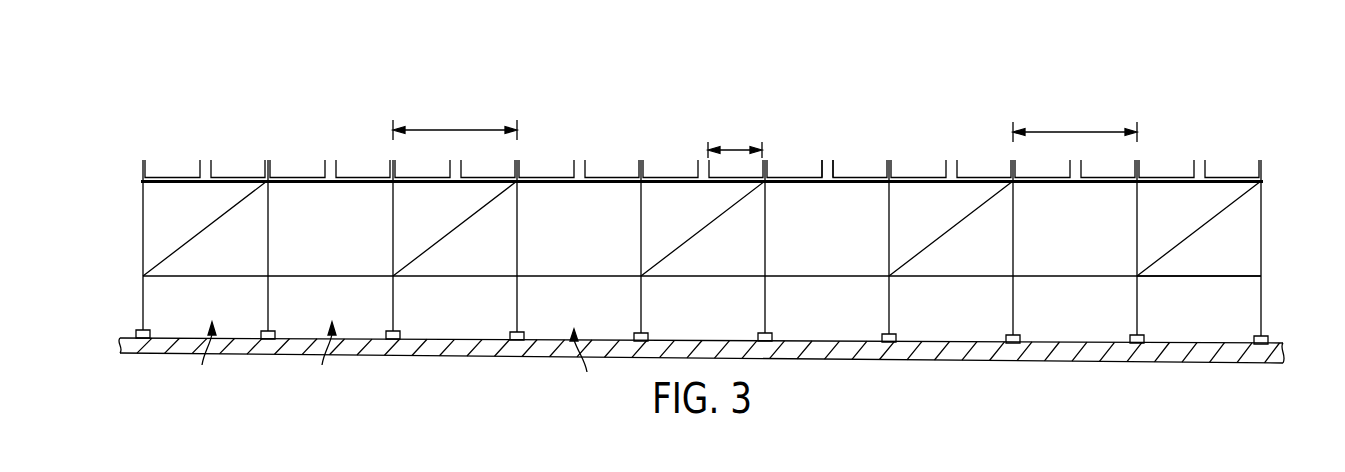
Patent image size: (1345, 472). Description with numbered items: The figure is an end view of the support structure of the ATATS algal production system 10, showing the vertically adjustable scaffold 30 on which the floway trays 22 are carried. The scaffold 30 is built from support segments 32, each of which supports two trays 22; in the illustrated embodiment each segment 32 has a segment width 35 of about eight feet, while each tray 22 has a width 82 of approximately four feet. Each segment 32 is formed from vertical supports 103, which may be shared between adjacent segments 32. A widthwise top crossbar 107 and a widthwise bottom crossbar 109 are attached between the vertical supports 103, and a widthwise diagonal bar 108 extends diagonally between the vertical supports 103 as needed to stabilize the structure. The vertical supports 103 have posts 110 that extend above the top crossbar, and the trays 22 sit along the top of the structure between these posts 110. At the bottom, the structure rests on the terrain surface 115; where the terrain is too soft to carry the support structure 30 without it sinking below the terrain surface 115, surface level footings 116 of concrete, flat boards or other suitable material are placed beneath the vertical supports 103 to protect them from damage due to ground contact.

The ATATS algal production system 10 is at (1311, 93).
The tray 22 is at (242, 178).
The segment width 35 is at (458, 130).
The width 82 is at (737, 147).
The widthwise top crossbar 107 is at (822, 178).
The post 110 is at (643, 178).
The vertical support 103 is at (888, 245).
The widthwise diagonal bar 108 is at (942, 238).
The widthwise bottom crossbar 109 is at (1067, 277).
The scaffold 30 is at (1202, 280).
The terrain surface 115 is at (697, 340).
The surface level footing 116 is at (150, 335).
The support segment 32 is at (394, 361).